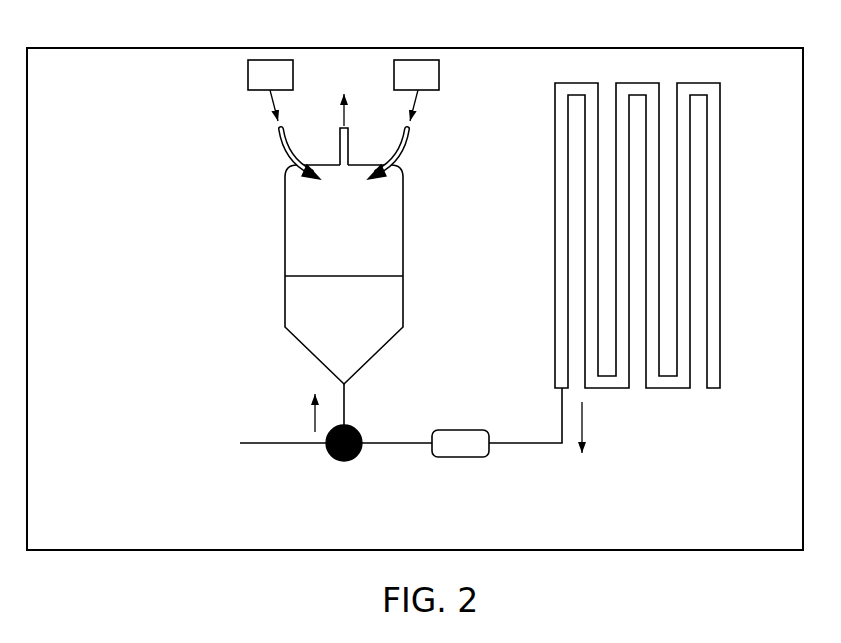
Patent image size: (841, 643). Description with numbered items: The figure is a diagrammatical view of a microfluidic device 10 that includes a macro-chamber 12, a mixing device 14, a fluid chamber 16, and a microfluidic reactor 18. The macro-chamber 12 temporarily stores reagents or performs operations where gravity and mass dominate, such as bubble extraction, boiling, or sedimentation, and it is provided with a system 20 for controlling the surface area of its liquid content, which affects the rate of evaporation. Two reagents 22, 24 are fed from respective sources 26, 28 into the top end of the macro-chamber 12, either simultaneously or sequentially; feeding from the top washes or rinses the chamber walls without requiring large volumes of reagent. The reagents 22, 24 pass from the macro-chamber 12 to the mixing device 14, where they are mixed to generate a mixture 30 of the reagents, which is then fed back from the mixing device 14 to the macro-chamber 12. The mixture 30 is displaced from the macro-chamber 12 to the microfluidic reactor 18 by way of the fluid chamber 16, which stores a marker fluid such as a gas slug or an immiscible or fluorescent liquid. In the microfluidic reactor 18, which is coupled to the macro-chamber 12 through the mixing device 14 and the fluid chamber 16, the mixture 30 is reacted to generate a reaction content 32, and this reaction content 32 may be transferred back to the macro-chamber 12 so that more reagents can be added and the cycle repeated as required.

The microfluidic device 10 is at (642, 46).
The macro-chamber 12 is at (403, 258).
The mixing device 14 is at (343, 462).
The fluid chamber 16 is at (461, 457).
The microfluidic reactor 18 is at (720, 233).
The system for controlling surface area 20 is at (419, 148).
The reagent 22 is at (266, 102).
The reagent 24 is at (412, 103).
The source 26 is at (293, 72).
The source 28 is at (439, 72).
The mixture of the reagents 30 is at (311, 413).
The reaction content 32 is at (585, 413).